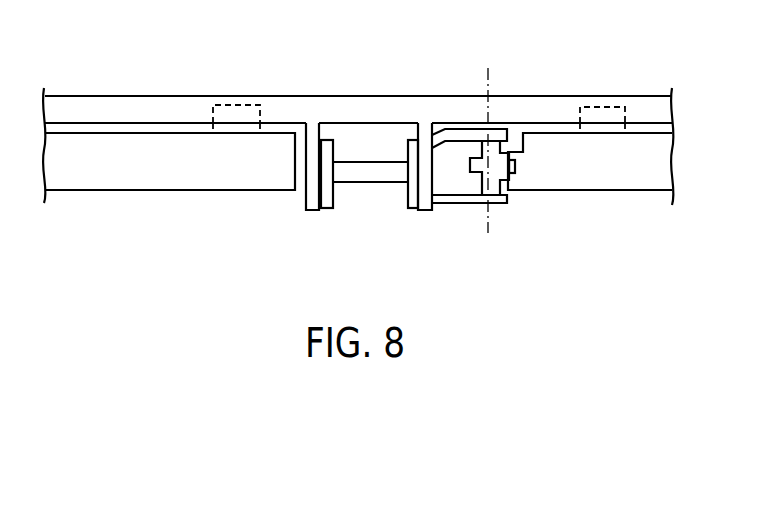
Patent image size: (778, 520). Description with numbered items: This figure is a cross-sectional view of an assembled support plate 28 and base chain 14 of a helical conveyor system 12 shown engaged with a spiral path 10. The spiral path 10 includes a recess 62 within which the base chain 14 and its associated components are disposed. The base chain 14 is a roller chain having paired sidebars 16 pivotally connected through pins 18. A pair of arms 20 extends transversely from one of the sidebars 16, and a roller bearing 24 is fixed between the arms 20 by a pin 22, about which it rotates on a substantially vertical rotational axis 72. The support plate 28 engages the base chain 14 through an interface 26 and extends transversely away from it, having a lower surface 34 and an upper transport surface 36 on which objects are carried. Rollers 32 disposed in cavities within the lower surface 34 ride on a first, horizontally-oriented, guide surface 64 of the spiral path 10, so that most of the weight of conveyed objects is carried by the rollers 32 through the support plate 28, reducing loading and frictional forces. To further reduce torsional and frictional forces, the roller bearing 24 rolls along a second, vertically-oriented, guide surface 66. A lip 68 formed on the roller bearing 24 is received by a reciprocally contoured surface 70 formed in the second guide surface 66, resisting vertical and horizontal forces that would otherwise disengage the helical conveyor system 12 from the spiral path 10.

The spiral path 10 is at (117, 220).
The helical conveyor system 12 is at (386, 66).
The base chain 14 is at (376, 207).
The sidebars 16 is at (327, 210).
The pins 18 is at (370, 177).
The arms 20 is at (490, 128).
The pin 22 is at (530, 215).
The roller bearing 24 is at (468, 148).
The interface 26 is at (313, 132).
The support plate 28 is at (663, 110).
The rollers 32 is at (235, 128).
The lower surface 34 is at (138, 129).
The upper transport surface 36 is at (612, 73).
The recess 62 is at (302, 205).
The first guide surface 64 is at (165, 128).
The second guide surface 66 is at (531, 168).
The lip 68 is at (523, 154).
The reciprocally contoured surface 70 is at (512, 173).
The rotational axis 72 is at (486, 82).